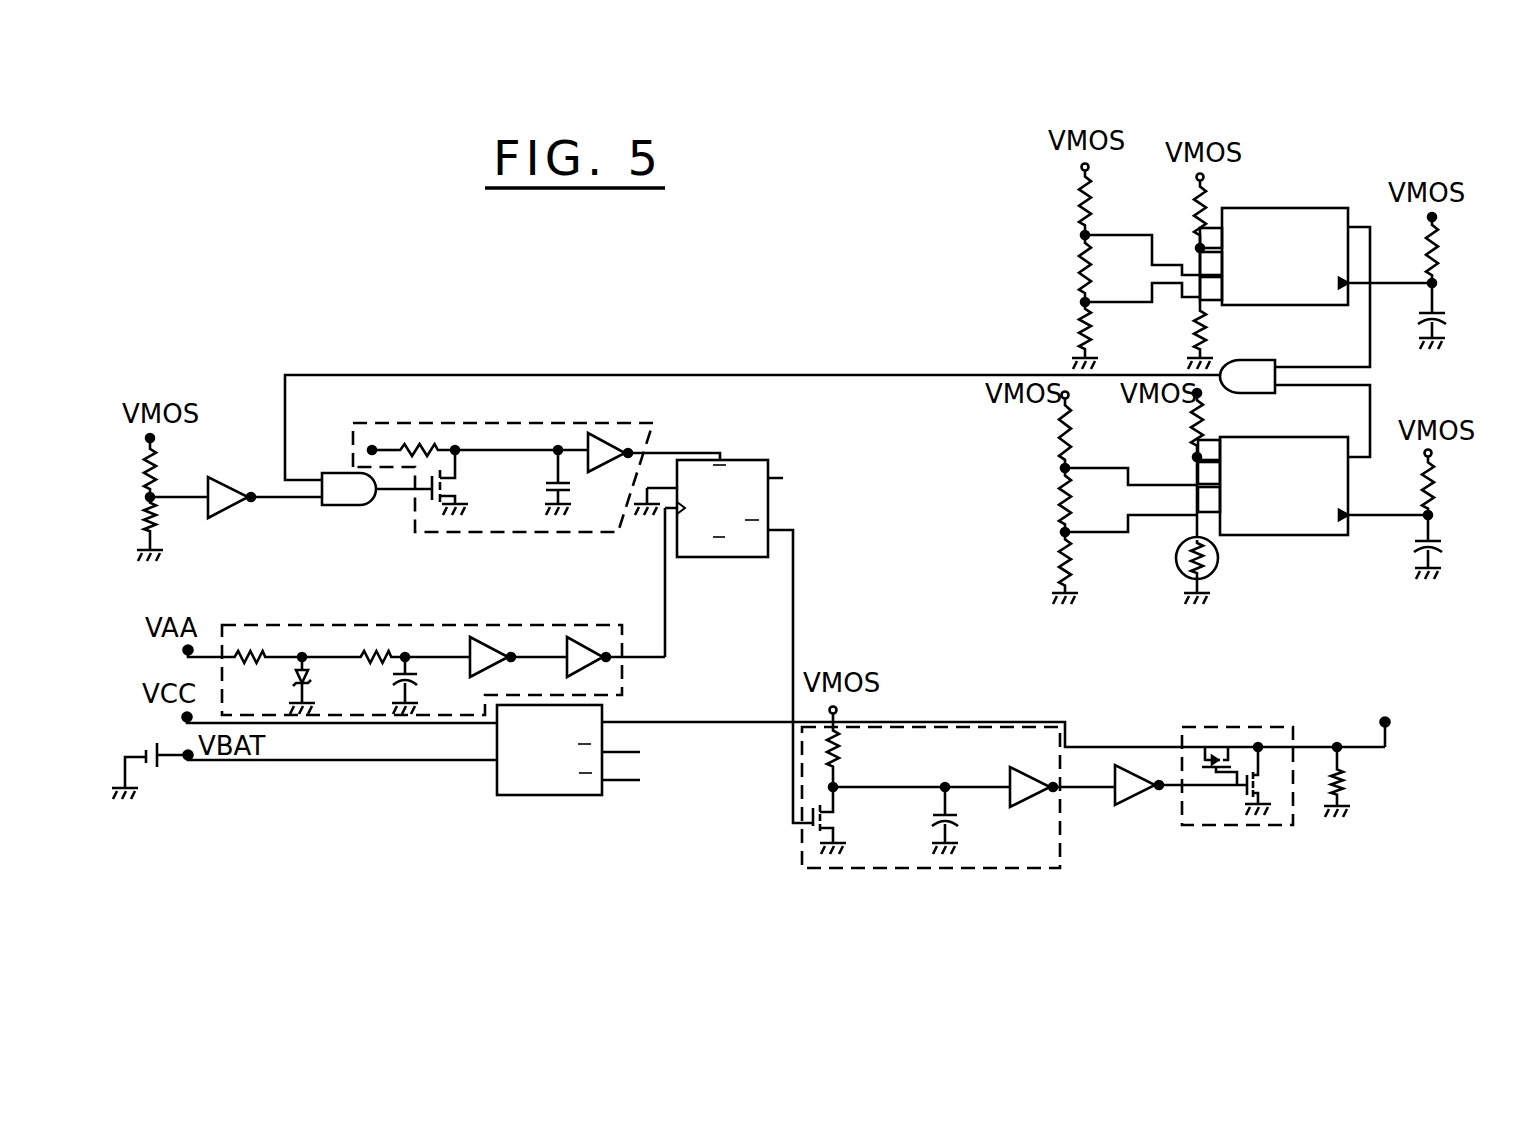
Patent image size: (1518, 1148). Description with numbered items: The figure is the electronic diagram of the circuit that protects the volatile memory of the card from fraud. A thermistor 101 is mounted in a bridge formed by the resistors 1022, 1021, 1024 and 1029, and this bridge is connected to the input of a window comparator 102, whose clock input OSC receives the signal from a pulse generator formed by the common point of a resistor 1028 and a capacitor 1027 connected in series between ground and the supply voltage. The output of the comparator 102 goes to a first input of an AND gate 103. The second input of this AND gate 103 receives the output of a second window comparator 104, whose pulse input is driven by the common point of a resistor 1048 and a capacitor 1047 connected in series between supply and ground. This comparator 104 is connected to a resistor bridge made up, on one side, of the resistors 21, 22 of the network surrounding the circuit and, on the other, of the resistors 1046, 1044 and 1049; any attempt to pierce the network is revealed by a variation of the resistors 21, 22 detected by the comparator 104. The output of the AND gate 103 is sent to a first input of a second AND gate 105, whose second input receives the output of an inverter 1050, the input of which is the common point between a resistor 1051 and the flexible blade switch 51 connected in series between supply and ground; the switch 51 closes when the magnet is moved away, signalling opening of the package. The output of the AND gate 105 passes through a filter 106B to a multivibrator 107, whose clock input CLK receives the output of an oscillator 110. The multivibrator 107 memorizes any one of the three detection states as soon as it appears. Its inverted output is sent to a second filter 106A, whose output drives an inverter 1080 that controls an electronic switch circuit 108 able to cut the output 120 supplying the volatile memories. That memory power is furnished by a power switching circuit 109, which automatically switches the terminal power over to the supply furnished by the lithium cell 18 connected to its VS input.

The resistor 21 is at (1090, 208).
The resistor 22 is at (1205, 205).
The resistor 1049 is at (1082, 270).
The resistor 1044 is at (1090, 333).
The resistor 1046 is at (1205, 330).
The second window comparator 104 is at (1325, 208).
The resistor 1048 is at (1462, 244).
The capacitor 1047 is at (1465, 298).
The AND gate 103 is at (1265, 360).
The resistor 1021 is at (1070, 425).
The resistor 1022 is at (1205, 422).
The resistor 1029 is at (1062, 500).
The resistor 1024 is at (1062, 560).
The thermistor 101 is at (1218, 566).
The window comparator 102 is at (1310, 535).
The resistor 1028 is at (1460, 478).
The capacitor 1027 is at (1434, 541).
The resistor 1051 is at (158, 463).
The flexible blade switch 51 is at (155, 527).
The inverter 1050 is at (232, 477).
The second AND gate 105 is at (330, 505).
The filter 106B is at (653, 432).
The multivibrator 107 is at (770, 465).
The oscillator 110 is at (470, 625).
The power switching circuit 109 is at (533, 795).
The lithium cell 18 is at (150, 783).
The second filter 106A is at (967, 868).
The inverter 1080 is at (1130, 792).
The electronic switch circuit 108 is at (1233, 727).
The output 120 is at (1389, 727).